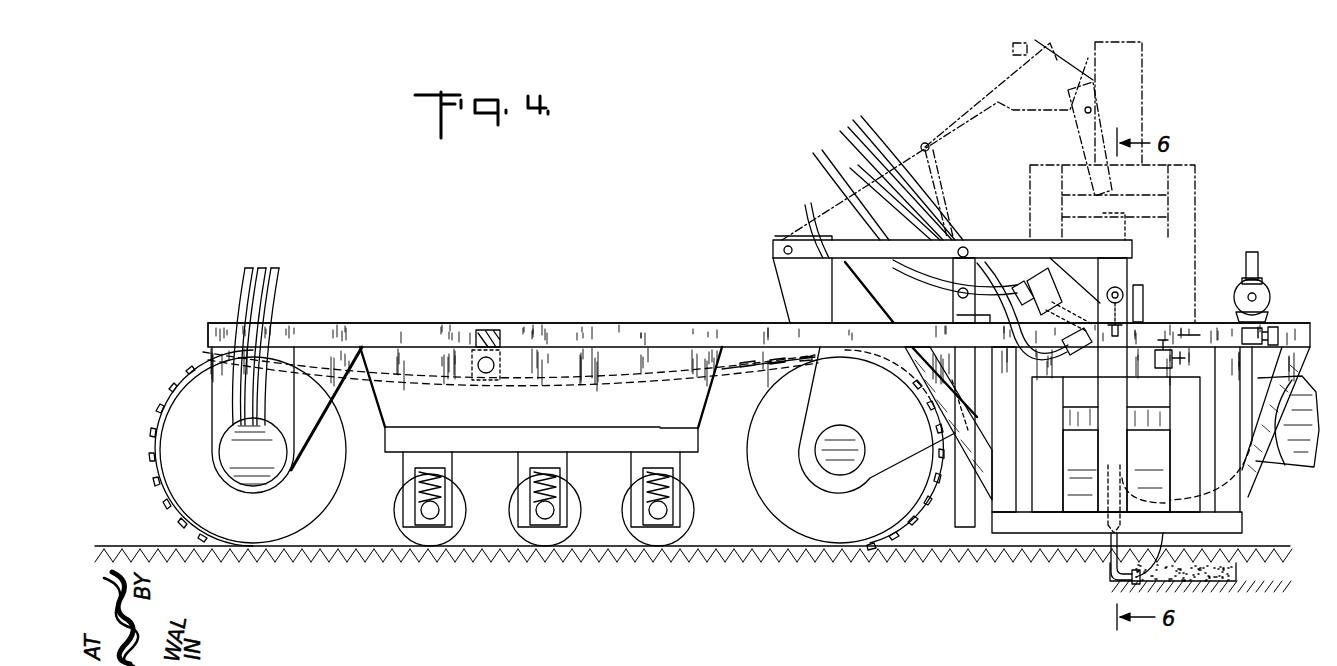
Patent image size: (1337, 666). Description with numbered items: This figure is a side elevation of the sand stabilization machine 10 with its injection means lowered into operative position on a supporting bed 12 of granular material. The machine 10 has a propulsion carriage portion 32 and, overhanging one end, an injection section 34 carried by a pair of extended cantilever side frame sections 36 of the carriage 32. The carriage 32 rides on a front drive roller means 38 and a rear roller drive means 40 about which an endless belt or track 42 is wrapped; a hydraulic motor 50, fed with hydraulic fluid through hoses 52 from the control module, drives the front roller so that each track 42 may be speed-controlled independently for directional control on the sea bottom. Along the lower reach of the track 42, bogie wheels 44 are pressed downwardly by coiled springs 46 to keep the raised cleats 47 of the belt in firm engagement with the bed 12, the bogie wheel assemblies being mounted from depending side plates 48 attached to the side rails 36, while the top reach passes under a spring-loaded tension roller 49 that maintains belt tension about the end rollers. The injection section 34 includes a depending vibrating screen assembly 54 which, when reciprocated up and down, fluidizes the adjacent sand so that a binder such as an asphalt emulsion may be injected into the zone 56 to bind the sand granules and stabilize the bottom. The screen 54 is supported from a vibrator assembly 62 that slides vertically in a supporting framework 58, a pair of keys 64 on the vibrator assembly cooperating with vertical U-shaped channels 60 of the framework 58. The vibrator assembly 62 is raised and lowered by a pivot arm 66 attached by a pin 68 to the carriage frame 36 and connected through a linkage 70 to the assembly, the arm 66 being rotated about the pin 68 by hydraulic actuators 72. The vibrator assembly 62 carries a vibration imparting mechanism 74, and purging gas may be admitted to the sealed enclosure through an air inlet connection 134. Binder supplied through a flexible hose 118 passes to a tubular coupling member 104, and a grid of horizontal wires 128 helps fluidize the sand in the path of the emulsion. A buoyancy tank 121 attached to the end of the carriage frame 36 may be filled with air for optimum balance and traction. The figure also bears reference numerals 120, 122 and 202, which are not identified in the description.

The sand stabilization machine 10 is at (728, 226).
The bed 12 is at (138, 545).
The propulsion carriage portion 32 is at (208, 330).
The injection section 34 is at (1209, 256).
The cantilever side frame sections 36 is at (644, 331).
The front drive roller means 38 is at (290, 518).
The rear roller drive means 40 is at (842, 527).
The endless belts or tracks 42 is at (928, 496).
The bogie wheels 44 is at (432, 538).
The coiled springs 46 is at (427, 470).
The raised cleats 47 is at (157, 427).
The depending side plates 48 is at (566, 414).
The tension roller 49 is at (503, 368).
The hydraulic motor 50 is at (259, 462).
The hoses 52 is at (286, 262).
The vibrating screen assembly 54 is at (1099, 570).
The zone 56 is at (1247, 577).
The supporting framework 58 is at (1241, 516).
The U-shaped channels 60 is at (1113, 452).
The vibrator assembly 62 is at (1200, 197).
The keys 64 is at (1100, 232).
The pivot arm 66 is at (945, 100).
The pin 68 is at (784, 249).
The linkage 70 is at (1082, 130).
The hydraulic actuators 72 is at (953, 298).
The vibration imparting mechanism 74 is at (1143, 72).
The tubular coupling member 104 is at (1108, 481).
The flexible hose 118 is at (1146, 478).
The valve 120 is at (1266, 288).
The buoyancy tank 121 is at (1302, 470).
The valve stem 122 is at (1253, 251).
The horizontal wires 128 is at (1167, 543).
The air inlet connection 134 is at (1175, 325).
The coupling 202 is at (1070, 53).